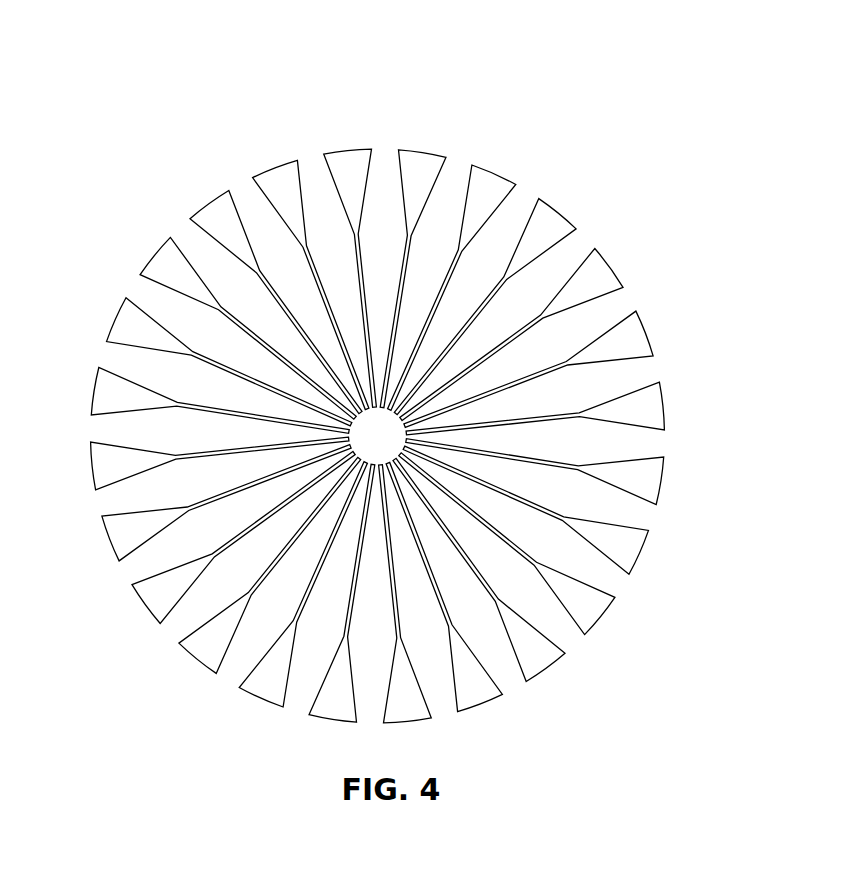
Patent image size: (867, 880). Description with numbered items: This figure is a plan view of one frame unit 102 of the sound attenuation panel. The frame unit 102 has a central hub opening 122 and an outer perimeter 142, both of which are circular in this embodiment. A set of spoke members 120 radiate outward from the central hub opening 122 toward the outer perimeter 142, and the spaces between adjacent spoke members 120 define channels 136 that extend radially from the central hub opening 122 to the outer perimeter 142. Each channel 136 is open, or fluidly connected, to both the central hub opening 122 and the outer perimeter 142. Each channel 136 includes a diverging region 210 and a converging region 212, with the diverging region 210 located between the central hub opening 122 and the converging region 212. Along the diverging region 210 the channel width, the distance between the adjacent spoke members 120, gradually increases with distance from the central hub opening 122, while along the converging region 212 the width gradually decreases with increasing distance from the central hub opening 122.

The frame unit 102 is at (402, 361).
The spoke member 120 is at (391, 236).
The central hub opening 122 is at (373, 428).
The channel 136 is at (399, 149).
The outer perimeter 142 is at (648, 333).
The diverging region 210 is at (414, 305).
The converging region 212 is at (450, 198).